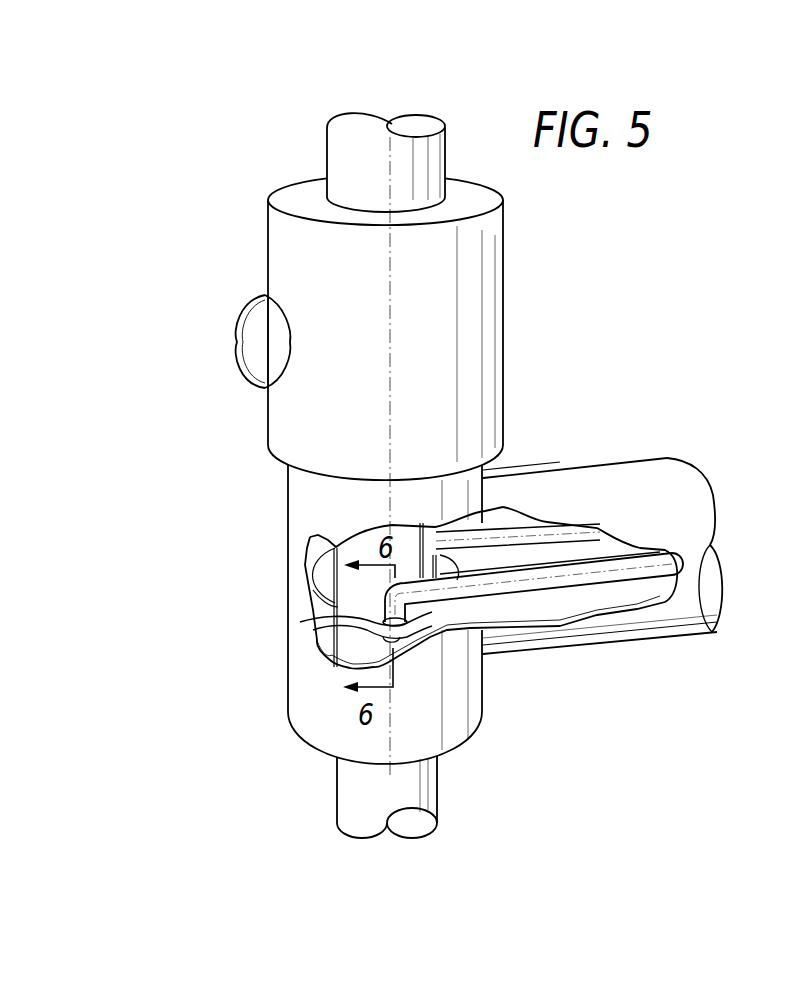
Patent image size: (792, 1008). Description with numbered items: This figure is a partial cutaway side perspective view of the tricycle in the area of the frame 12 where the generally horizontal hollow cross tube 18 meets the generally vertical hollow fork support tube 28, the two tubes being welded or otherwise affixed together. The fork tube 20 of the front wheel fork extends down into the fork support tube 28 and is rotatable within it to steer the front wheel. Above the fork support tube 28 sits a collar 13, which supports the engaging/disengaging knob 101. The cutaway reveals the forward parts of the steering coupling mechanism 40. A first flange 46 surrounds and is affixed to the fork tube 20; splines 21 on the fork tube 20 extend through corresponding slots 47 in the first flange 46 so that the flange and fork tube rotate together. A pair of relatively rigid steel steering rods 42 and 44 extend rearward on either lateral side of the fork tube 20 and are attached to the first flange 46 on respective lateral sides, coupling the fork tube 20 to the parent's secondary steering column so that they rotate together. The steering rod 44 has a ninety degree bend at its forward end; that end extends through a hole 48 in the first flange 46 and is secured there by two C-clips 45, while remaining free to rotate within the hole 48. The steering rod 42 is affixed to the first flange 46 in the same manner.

The frame 12 is at (678, 432).
The collar 13 is at (268, 243).
The cross tube 18 is at (635, 460).
The fork tube 20 is at (418, 538).
The splines 21 is at (338, 590).
The fork support tube 28 is at (288, 491).
The steering coupling mechanism 40 is at (258, 599).
The steering rod 42 is at (528, 530).
The steering rod 44 is at (573, 582).
The C-clips 45 is at (392, 586).
The first flange 46 is at (430, 610).
The slots 47 is at (300, 622).
The hole 48 is at (403, 618).
The engaging/disengaging knob 101 is at (238, 341).